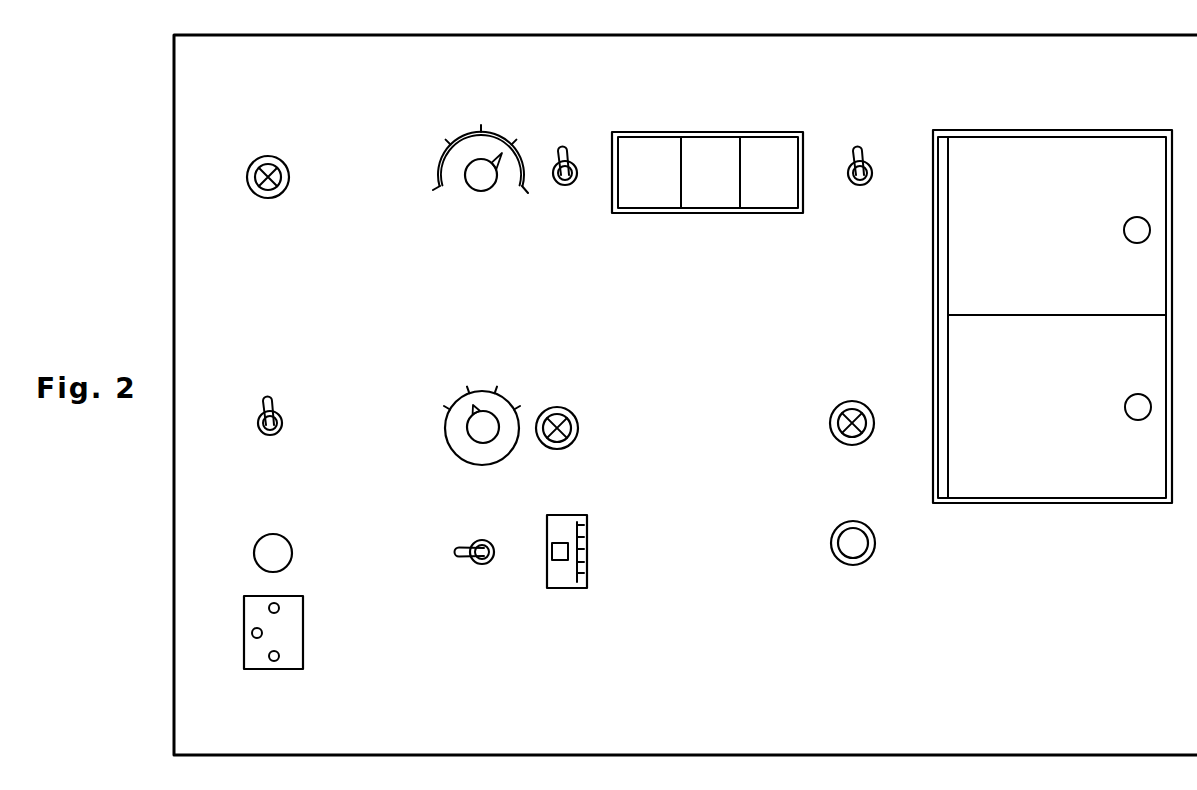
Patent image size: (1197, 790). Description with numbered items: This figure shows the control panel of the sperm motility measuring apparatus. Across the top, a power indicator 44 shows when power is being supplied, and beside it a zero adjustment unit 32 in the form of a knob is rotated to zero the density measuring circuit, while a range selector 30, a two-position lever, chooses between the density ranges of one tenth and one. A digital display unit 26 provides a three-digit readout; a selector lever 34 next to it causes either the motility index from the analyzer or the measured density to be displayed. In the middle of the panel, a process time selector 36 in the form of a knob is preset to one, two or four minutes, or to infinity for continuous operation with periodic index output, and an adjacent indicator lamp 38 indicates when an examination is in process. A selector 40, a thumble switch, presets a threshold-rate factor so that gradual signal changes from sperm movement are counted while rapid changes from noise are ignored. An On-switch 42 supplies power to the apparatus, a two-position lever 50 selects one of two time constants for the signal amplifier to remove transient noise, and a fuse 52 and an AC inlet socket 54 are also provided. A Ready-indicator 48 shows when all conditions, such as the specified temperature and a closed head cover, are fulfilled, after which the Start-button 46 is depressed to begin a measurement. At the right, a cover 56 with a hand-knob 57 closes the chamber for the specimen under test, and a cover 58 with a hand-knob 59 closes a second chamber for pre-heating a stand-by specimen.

The digital display unit 26 is at (710, 132).
The range selector 30 is at (570, 162).
The zero adjustment unit 32 is at (481, 163).
The selector lever 34 is at (873, 168).
The process time selector 36 is at (463, 445).
The indicator lamp 38 is at (573, 413).
The selector 40 is at (587, 535).
The On-switch 42 is at (279, 410).
The power indicator 44 is at (282, 158).
The Start-button 46 is at (877, 545).
The Ready-indicator 48 is at (875, 427).
The two-position lever 50 is at (476, 558).
The fuse 52 is at (271, 534).
The AC inlet socket 54 is at (253, 617).
The cover 56 is at (1040, 384).
The hand-knob 57 is at (1143, 395).
The cover 58 is at (1047, 206).
The hand-knob 59 is at (1139, 217).